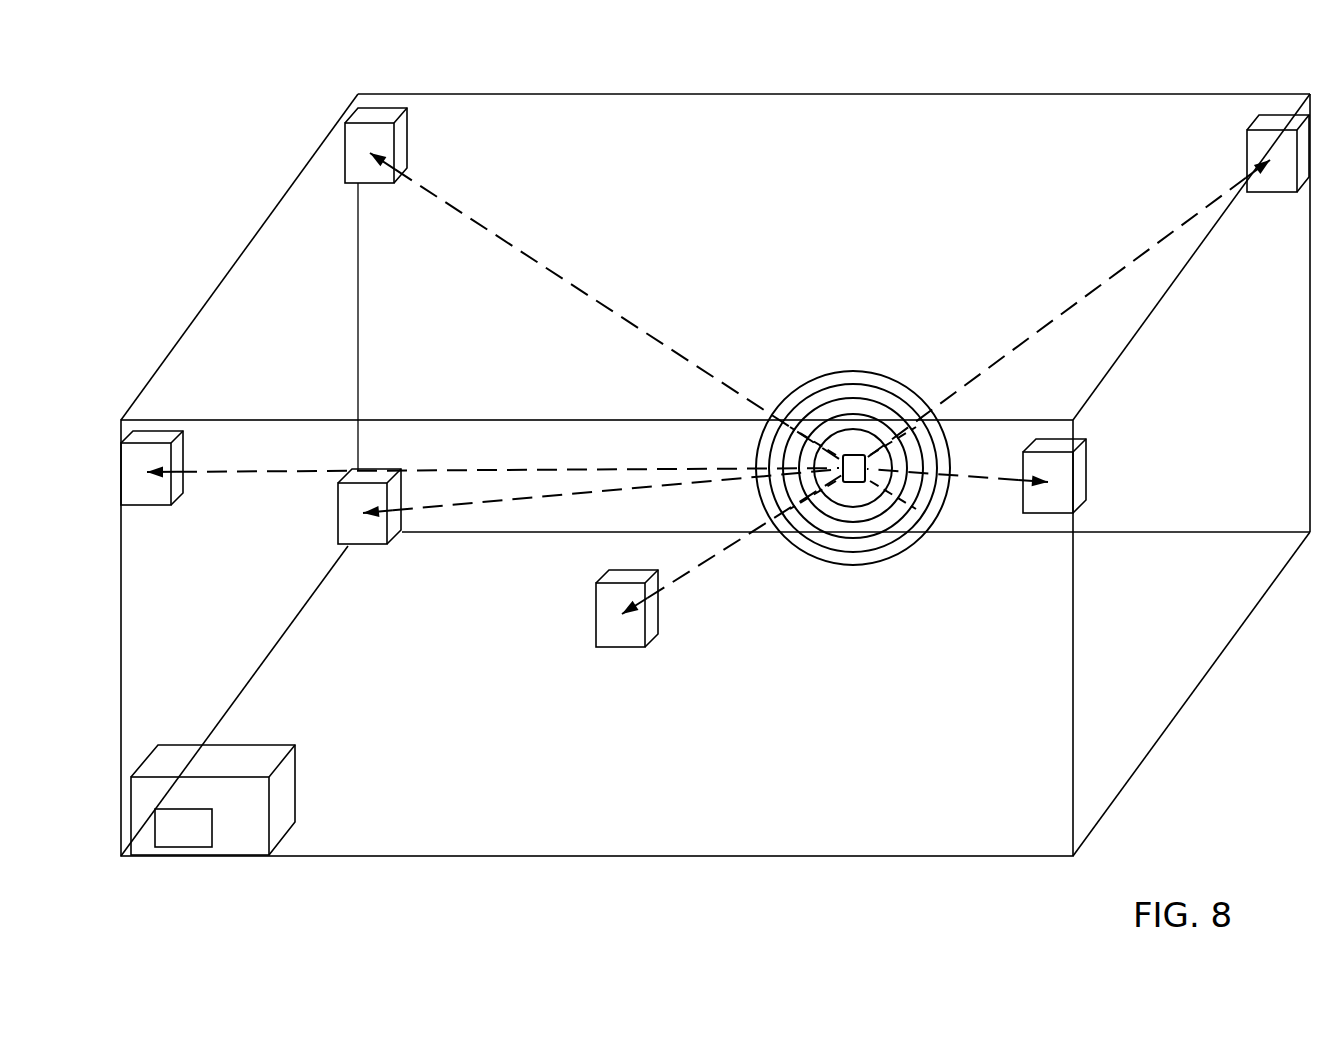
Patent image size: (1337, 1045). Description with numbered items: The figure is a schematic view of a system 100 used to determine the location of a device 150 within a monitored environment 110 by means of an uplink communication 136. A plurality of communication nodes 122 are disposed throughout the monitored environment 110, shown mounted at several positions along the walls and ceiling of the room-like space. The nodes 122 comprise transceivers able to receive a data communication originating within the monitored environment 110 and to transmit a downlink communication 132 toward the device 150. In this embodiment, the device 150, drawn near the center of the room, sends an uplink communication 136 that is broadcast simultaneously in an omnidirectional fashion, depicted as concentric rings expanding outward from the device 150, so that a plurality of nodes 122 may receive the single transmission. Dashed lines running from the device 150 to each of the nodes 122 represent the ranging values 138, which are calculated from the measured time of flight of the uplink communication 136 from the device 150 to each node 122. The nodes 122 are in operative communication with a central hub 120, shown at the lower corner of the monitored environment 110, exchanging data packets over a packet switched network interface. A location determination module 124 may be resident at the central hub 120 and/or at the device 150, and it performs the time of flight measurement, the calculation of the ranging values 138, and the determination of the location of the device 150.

The system 100 is at (122, 144).
The monitored environment 110 is at (795, 624).
The central hub 120 is at (283, 797).
The communication nodes 122 is at (393, 169).
The location determination module 124 is at (213, 829).
The downlink communication 132 is at (985, 513).
The uplink communication 136 is at (868, 392).
The ranging values 138 is at (600, 302).
The device 150 is at (850, 455).